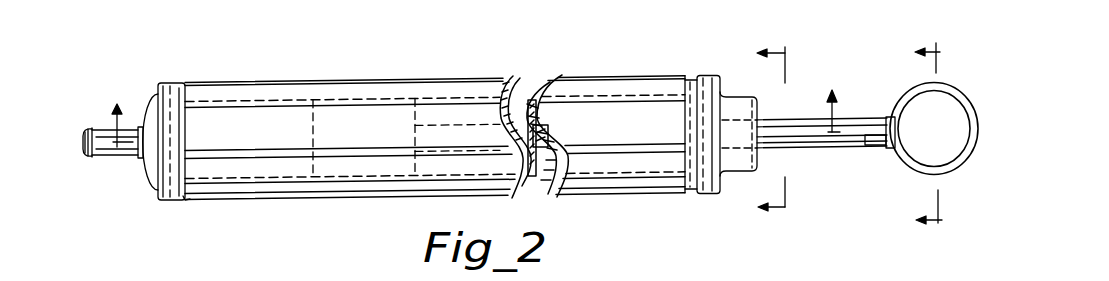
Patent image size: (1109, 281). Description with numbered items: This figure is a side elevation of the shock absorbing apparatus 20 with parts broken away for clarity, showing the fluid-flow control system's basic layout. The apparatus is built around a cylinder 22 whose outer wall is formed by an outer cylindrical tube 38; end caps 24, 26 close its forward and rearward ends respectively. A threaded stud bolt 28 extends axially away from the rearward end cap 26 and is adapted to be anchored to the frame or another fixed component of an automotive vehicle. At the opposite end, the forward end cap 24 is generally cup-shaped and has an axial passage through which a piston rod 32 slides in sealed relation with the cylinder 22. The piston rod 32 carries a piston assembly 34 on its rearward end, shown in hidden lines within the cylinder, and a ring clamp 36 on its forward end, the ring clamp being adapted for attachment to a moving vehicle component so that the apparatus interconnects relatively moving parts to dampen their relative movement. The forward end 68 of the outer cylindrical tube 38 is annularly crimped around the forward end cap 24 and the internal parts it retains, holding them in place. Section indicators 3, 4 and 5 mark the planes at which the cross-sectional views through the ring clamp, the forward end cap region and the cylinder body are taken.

The shock absorbing apparatus 20 is at (421, 74).
The cylinder 22 is at (513, 78).
The end cap 24 is at (730, 101).
The end cap 26 is at (141, 112).
The threaded stud bolt 28 is at (97, 158).
The piston rod 32 is at (872, 146).
The piston assembly 34 is at (313, 137).
The ring clamp 36 is at (954, 85).
The outer cylindrical tube 38 is at (670, 76).
The forward end of the outer cylindrical tube 68 is at (708, 188).
The section line 3- 3 is at (917, 136).
The section line 4- 4 is at (758, 133).
The section line 5- 5 is at (475, 106).